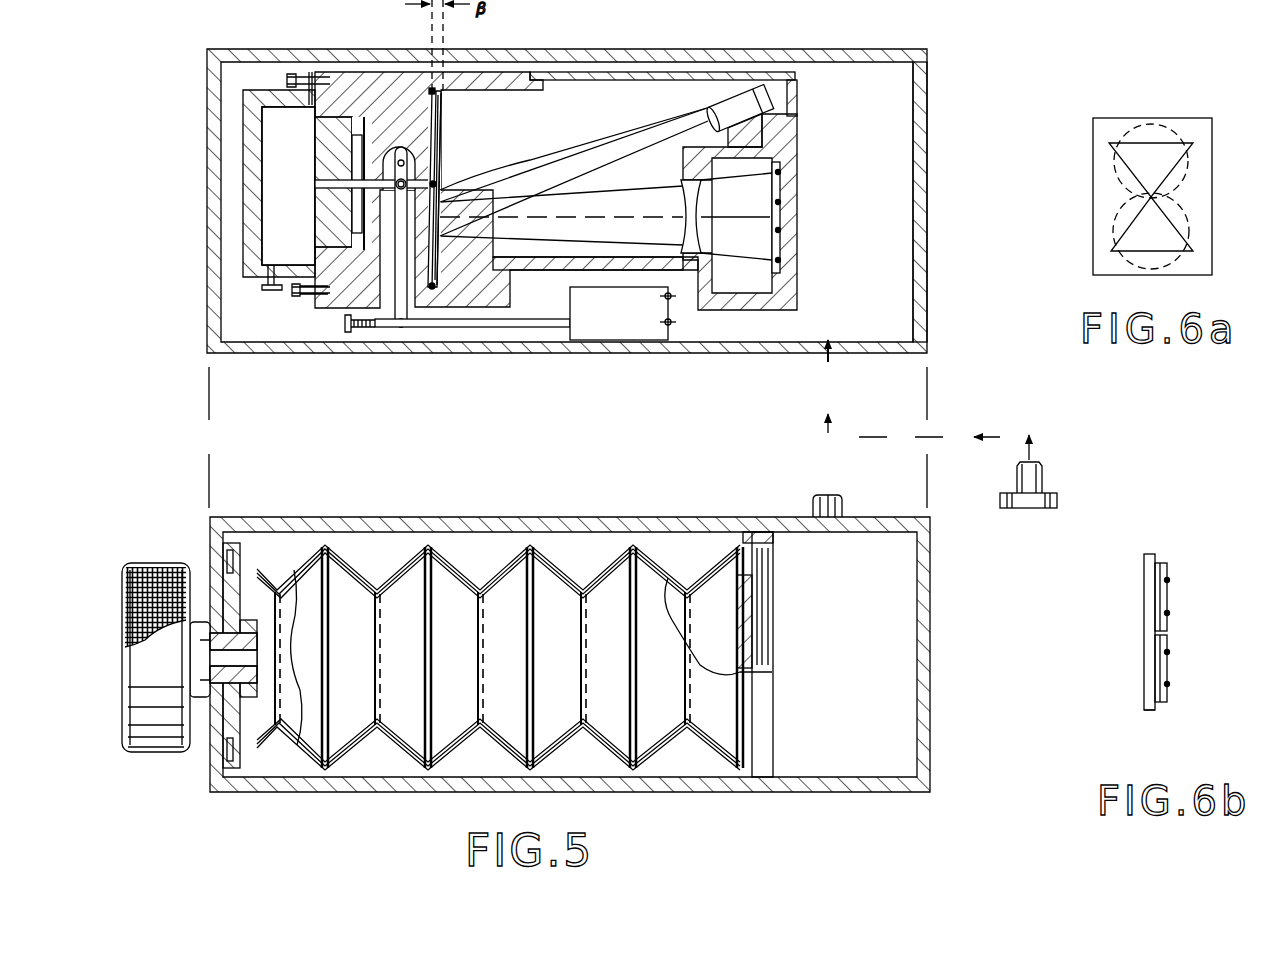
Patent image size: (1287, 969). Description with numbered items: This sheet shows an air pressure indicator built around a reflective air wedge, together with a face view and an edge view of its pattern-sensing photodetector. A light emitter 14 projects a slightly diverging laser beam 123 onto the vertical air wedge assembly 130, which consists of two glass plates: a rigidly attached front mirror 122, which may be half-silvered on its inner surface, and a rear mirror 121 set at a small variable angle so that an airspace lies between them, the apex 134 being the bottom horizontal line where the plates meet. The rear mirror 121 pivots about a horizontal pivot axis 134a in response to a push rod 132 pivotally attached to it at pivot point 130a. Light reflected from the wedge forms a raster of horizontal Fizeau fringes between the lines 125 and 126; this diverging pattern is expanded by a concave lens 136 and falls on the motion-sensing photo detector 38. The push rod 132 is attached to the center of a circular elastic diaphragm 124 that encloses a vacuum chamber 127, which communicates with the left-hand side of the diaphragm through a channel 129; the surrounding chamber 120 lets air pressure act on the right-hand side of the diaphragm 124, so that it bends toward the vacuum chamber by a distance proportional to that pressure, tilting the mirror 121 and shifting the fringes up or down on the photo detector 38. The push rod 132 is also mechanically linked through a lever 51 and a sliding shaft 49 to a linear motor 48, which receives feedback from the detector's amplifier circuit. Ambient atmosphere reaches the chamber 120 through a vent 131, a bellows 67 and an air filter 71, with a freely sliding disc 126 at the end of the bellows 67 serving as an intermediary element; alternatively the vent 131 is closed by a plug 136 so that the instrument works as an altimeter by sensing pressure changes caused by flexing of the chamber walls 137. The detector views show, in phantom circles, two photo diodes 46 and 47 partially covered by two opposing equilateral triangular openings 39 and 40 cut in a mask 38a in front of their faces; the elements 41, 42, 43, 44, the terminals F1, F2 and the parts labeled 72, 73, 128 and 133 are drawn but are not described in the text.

In FIG. 5, the light emitter 14 is at (760, 100).
In FIG. 5, the motion-sensing photo detector 38 is at (772, 273).
In FIG. 6a, the motion-sensing photo detector 38 is at (1124, 114).
In FIG. 6b, the motion-sensing photo detector 38 is at (1152, 552).
In FIG. 6b, the mask 38a is at (1150, 712).
In FIG. 6a, the equilateral triangular opening 39 is at (1132, 176).
In FIG. 6b, the equilateral triangular opening 39 is at (1144, 588).
In FIG. 6a, the equilateral triangular opening 40 is at (1172, 222).
In FIG. 6b, the equilateral triangular opening 40 is at (1144, 676).
In FIG. 5, the detector lead 41 is at (780, 172).
In FIG. 6b, the detector lead 41 is at (1167, 580).
In FIG. 5, the detector lead 42 is at (780, 202).
In FIG. 6b, the detector lead 42 is at (1167, 613).
In FIG. 5, the detector lead 43 is at (780, 230).
In FIG. 6b, the detector lead 43 is at (1167, 652).
In FIG. 5, the detector lead 44 is at (780, 260).
In FIG. 6b, the detector lead 44 is at (1167, 684).
In FIG. 6a, the photo diode 46 is at (1115, 168).
In FIG. 6b, the photo diode 46 is at (1160, 571).
In FIG. 6a, the photo diode 47 is at (1188, 237).
In FIG. 6b, the photo diode 47 is at (1165, 698).
In FIG. 5, the linear motor 48 is at (629, 315).
In FIG. 5, the sliding shaft 49 is at (477, 326).
In FIG. 5, the lever 51 is at (400, 260).
In FIG. 5, the bellows 67 is at (523, 695).
In FIG. 5, the air filter 71 is at (153, 562).
In FIG. 5, the knurled knob surface 72 is at (130, 601).
In FIG. 5, the threaded boss 73 is at (250, 661).
In FIG. 5, the chamber 120 is at (872, 136).
In FIG. 5, the rear mirror 121 is at (442, 153).
In FIG. 5, the front mirror 122 is at (445, 130).
In FIG. 5, the laser beam 123 is at (576, 156).
In FIG. 5, the circular elastic diaphragm 124 is at (363, 207).
In FIG. 5, the line 125 is at (620, 190).
In FIG. 5, the line / freely sliding disc 126 is at (795, 715).
In FIG. 5, the vacuum chamber 127 is at (303, 244).
In FIG. 5, the motor housing 128 is at (243, 175).
In FIG. 5, the channel 129 is at (322, 183).
In FIG. 5, the air wedge assembly 130 is at (440, 181).
In FIG. 5, the pivot point 130a is at (575, 153).
In FIG. 5, the vent 131 is at (830, 343).
In FIG. 5, the push rod 132 is at (422, 153).
In FIG. 5, the mounting block 133 is at (339, 120).
In FIG. 5, the apex 134 is at (434, 290).
In FIG. 5, the horizontal pivot axis 134a is at (436, 286).
In FIG. 5, the concave lens / plug 136 is at (702, 232).
In FIG. 5, the walls 137 is at (927, 240).
In FIG. 5, the terminal F1 is at (683, 289).
In FIG. 5, the terminal F2 is at (676, 323).